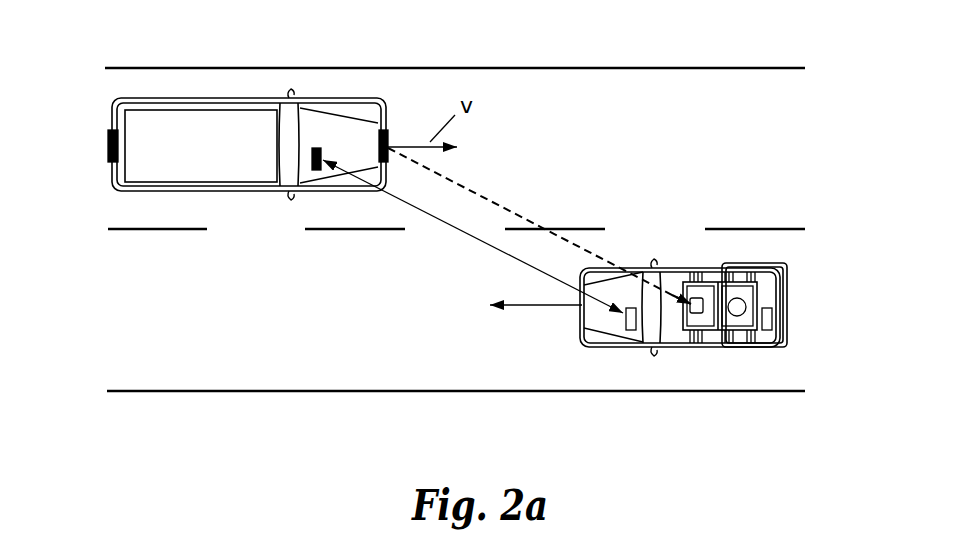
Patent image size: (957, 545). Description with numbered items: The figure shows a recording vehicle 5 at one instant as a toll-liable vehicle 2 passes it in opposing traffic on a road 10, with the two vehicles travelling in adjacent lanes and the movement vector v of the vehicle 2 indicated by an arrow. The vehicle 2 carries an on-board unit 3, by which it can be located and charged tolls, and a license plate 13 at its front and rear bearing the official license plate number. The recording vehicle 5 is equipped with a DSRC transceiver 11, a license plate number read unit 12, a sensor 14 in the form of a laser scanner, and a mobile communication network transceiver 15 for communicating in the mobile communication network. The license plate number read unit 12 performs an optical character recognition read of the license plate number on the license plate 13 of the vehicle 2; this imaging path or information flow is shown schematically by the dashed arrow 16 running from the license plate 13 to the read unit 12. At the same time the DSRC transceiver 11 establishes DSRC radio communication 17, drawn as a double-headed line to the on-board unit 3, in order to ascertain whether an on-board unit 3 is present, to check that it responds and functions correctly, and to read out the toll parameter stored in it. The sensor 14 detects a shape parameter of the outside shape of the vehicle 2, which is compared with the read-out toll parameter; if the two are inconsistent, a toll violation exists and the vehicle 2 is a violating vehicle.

The vehicle 2 is at (229, 102).
The on-board unit 3 is at (318, 148).
The recording vehicle 5 is at (763, 345).
The road 10 is at (163, 391).
The DSRC transceiver 11 is at (630, 330).
The license plate number read unit 12 is at (696, 313).
The license plate 13 is at (108, 135).
The sensor 14 is at (737, 316).
The mobile communication network transceiver 15 is at (772, 320).
The arrow 16 is at (485, 202).
The DSRC radio communication 17 is at (468, 237).